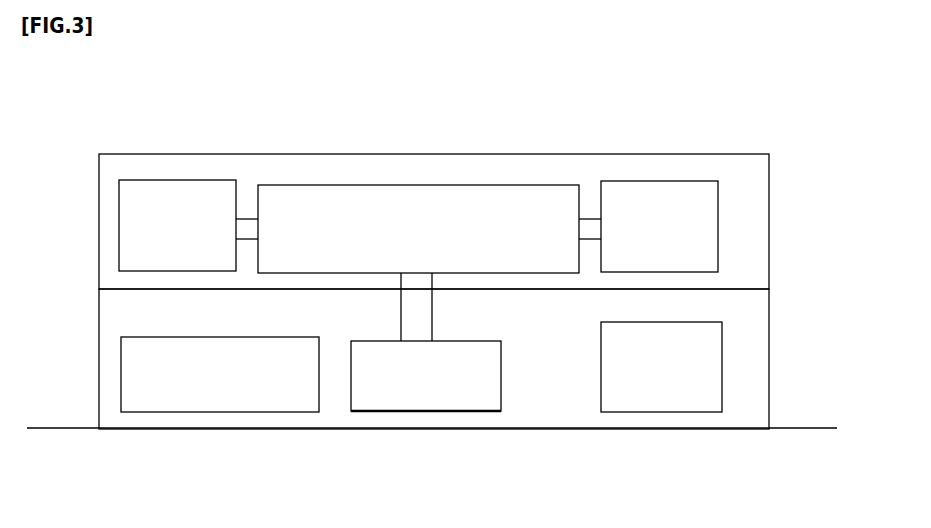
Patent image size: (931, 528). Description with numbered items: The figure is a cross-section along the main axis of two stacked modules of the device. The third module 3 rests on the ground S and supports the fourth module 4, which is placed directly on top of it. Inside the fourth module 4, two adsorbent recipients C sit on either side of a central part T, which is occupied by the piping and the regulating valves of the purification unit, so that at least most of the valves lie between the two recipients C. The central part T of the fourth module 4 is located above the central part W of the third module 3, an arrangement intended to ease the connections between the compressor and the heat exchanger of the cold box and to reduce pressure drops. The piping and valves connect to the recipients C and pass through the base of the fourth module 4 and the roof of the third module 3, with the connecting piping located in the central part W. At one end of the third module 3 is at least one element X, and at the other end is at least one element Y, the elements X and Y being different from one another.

The third module 3 is at (742, 352).
The fourth module 4 is at (746, 211).
The adsorbent recipients C is at (170, 200).
The central part of the fourth module T is at (390, 208).
The central part of the third module W is at (437, 395).
The element X is at (190, 395).
The element Y is at (663, 390).
The ground S is at (788, 428).